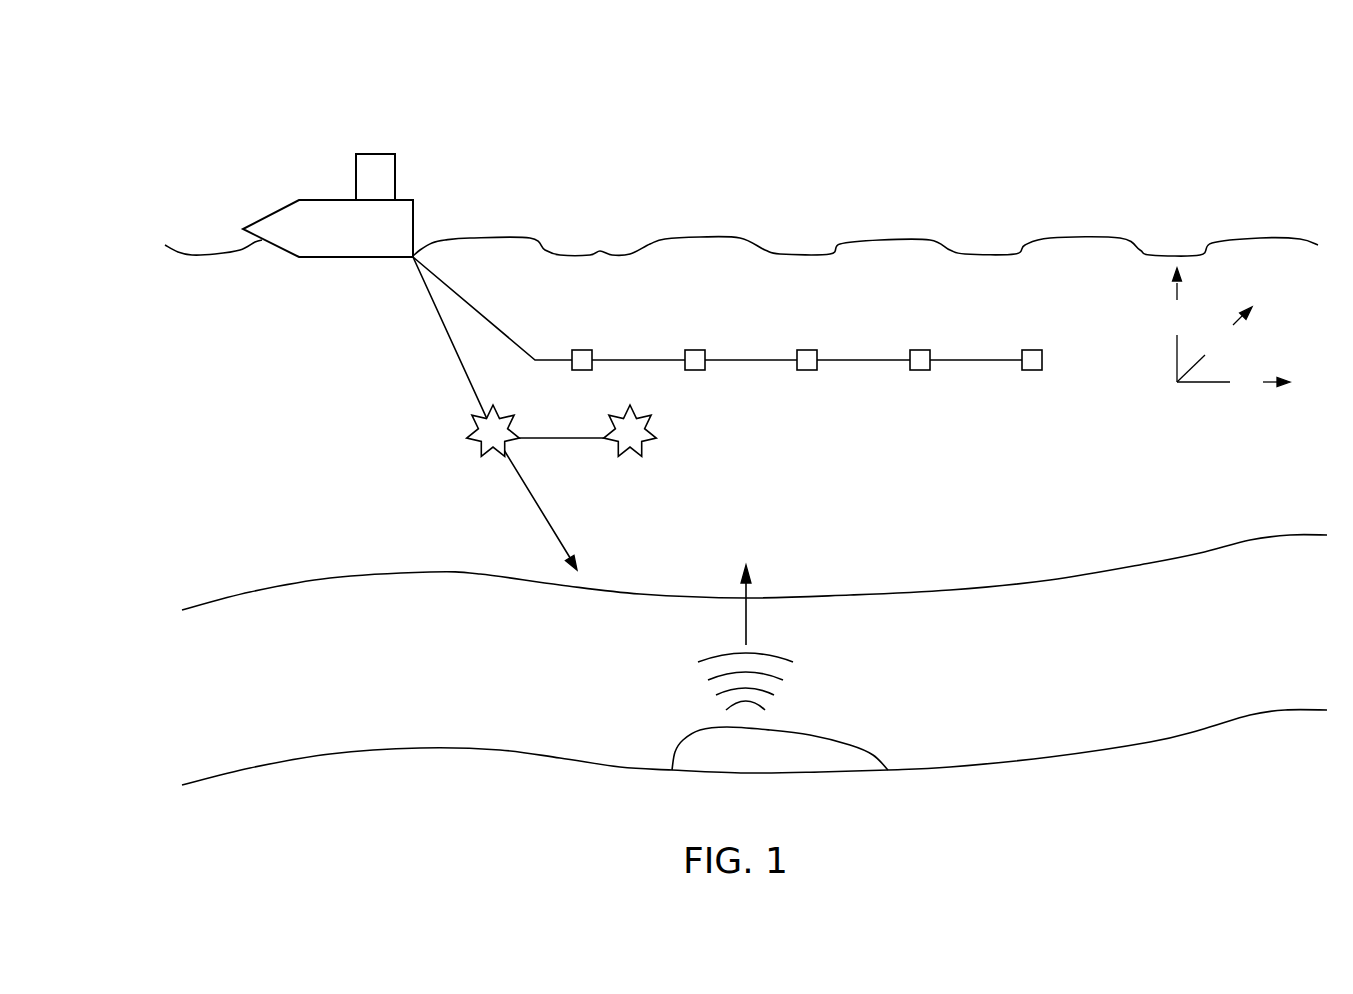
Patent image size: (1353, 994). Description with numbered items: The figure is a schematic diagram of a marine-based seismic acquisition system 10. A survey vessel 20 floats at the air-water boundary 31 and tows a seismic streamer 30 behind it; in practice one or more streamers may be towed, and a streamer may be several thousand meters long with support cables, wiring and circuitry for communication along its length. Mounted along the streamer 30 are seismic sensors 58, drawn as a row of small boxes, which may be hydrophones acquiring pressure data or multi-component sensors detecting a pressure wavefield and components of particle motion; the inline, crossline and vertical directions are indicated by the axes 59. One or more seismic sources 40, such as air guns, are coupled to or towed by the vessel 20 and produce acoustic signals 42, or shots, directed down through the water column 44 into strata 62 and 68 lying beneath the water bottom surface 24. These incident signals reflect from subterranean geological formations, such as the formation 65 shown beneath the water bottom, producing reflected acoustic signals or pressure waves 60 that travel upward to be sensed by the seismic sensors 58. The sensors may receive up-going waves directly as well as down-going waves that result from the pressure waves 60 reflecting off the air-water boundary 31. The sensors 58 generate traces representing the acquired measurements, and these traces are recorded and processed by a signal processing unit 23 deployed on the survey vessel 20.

The marine-based seismic acquisition system 10 is at (231, 158).
The survey vessel 20 is at (407, 200).
The signal processing unit 23 is at (370, 153).
The water bottom surface 24 is at (947, 590).
The seismic streamer 30 is at (491, 318).
The air-water boundary 31 is at (1053, 237).
The seismic source 40 is at (520, 436).
The acoustic signal 42 is at (548, 528).
The water column 44 is at (347, 414).
The seismic sensor 58 is at (587, 351).
The axes 59 is at (1172, 412).
The pressure wave 60 is at (686, 690).
The stratum 62 is at (325, 664).
The subterranean geological formation 65 is at (762, 762).
The stratum 68 is at (372, 799).